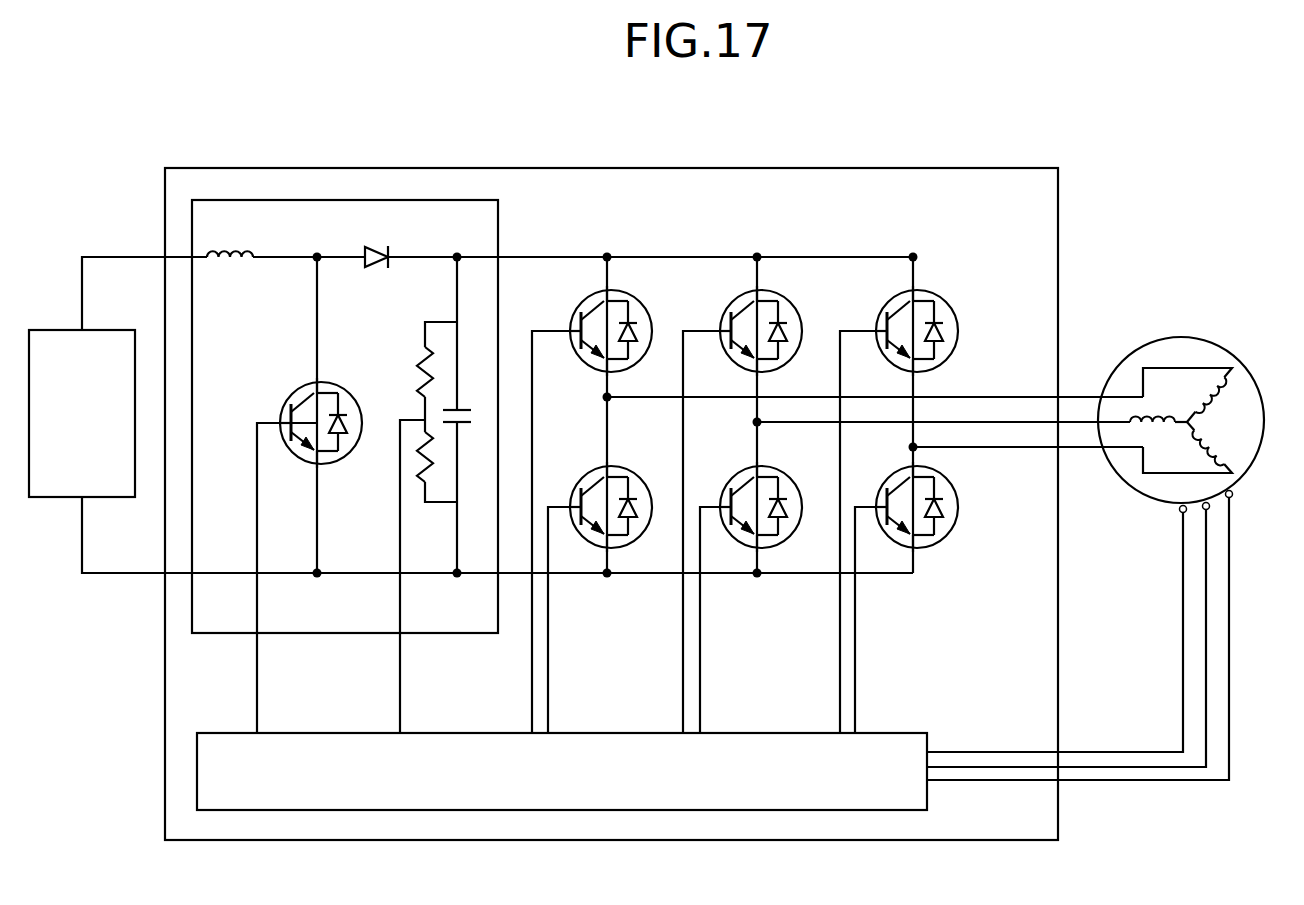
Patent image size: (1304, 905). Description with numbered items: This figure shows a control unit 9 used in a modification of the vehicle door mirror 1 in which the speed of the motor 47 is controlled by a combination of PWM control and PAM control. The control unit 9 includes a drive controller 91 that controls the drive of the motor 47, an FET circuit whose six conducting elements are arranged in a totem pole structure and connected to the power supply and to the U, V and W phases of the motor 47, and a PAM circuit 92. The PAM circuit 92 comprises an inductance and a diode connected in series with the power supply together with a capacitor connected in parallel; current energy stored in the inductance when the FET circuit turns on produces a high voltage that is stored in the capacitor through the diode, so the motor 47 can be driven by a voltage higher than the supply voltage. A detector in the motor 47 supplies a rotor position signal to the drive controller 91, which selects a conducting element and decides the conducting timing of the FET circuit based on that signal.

The vehicle door mirror 1 is at (1136, 184).
The control unit 9 is at (1005, 167).
The motor 47 is at (1243, 360).
The drive controller 91 is at (880, 810).
The PAM circuit 92 is at (411, 200).